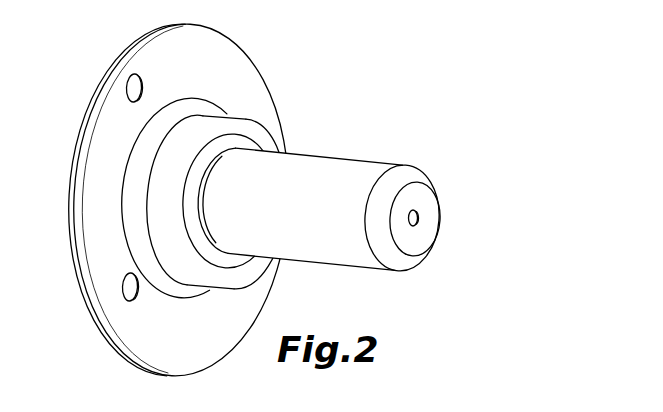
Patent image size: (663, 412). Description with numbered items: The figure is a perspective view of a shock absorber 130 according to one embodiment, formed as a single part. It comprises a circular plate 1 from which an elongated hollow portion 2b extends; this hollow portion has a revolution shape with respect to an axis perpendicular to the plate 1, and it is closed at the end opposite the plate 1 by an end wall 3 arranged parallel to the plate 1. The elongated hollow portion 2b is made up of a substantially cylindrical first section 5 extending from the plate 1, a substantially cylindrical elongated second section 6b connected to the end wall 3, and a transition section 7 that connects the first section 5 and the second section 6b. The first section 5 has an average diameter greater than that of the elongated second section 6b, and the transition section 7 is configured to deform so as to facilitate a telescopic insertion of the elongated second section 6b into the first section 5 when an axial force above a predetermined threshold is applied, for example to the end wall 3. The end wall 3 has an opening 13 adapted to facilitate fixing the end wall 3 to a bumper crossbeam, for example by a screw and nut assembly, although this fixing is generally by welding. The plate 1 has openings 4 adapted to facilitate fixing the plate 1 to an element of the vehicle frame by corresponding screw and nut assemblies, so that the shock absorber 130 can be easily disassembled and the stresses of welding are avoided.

The shock absorber 130 is at (261, 198).
The plate 1 is at (96, 134).
The openings 4 is at (127, 80).
The first section 5 is at (208, 118).
The transition section 7 is at (258, 140).
The elongated hollow portion 2b is at (339, 205).
The elongated second section 6b is at (322, 258).
The end wall 3 is at (424, 200).
The opening 13 is at (418, 219).